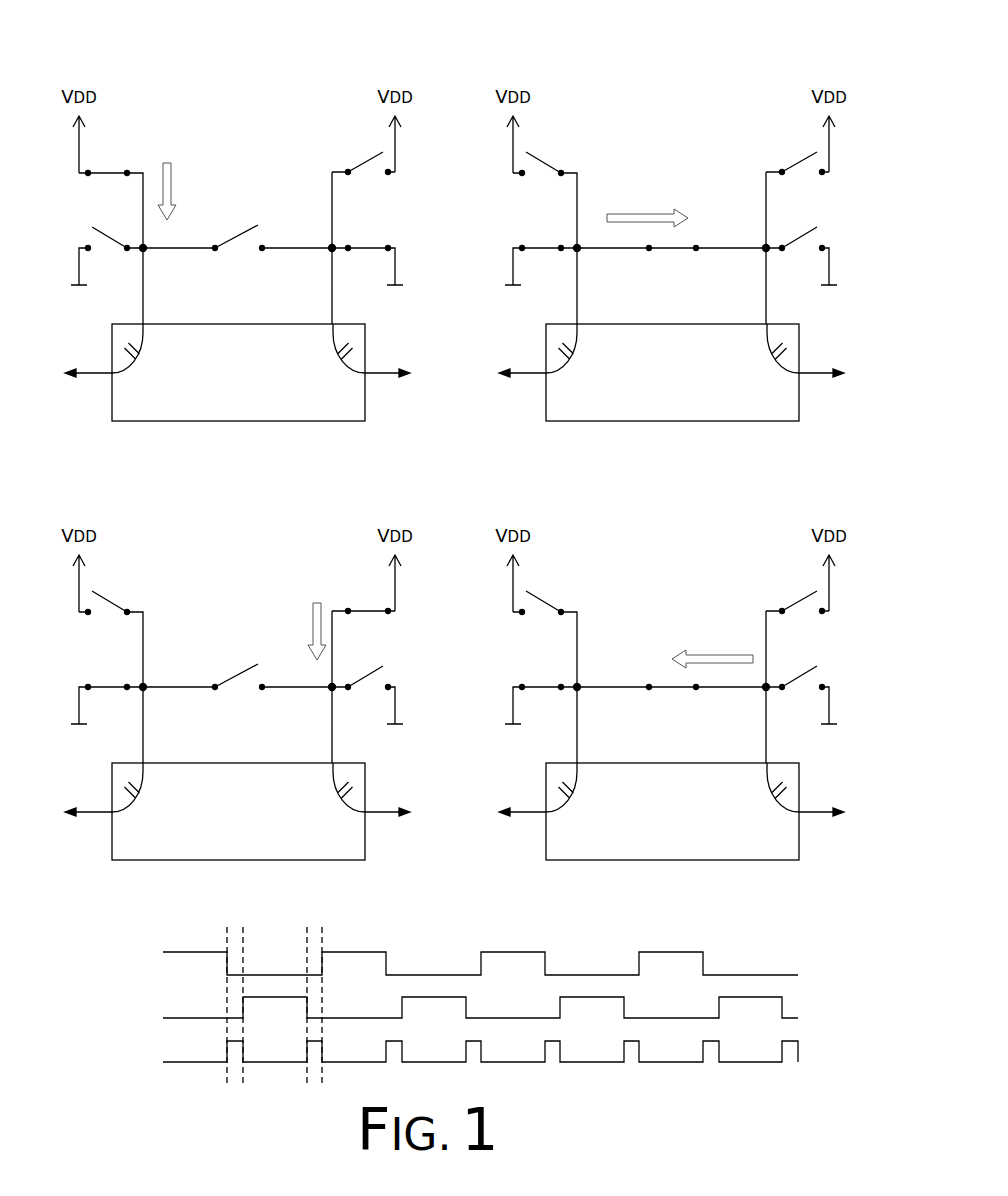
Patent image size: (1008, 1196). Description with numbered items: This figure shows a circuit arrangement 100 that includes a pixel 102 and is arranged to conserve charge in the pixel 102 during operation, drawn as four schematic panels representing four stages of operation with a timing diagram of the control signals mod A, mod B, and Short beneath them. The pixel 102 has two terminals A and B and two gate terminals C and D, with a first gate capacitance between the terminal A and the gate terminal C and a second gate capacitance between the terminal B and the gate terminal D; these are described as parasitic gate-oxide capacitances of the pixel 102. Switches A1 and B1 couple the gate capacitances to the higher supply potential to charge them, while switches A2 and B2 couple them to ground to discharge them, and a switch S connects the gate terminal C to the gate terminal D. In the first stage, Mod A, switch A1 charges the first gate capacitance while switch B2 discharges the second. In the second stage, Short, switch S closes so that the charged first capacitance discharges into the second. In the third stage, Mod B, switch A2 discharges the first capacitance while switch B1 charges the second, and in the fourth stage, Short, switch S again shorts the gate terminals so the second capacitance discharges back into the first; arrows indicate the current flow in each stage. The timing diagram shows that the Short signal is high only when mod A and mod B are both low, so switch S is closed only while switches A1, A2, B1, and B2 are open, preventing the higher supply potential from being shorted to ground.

The circuit arrangement 100 is at (789, 41).
The pixel 102 is at (224, 414).
The switch A1 is at (325, 395).
The switch A2 is at (325, 470).
The switch S is at (456, 469).
The switch B1 is at (585, 395).
The switch B2 is at (585, 470).
The gate terminal C is at (356, 557).
The gate terminal D is at (553, 557).
The terminal A is at (305, 579).
The terminal B is at (604, 579).